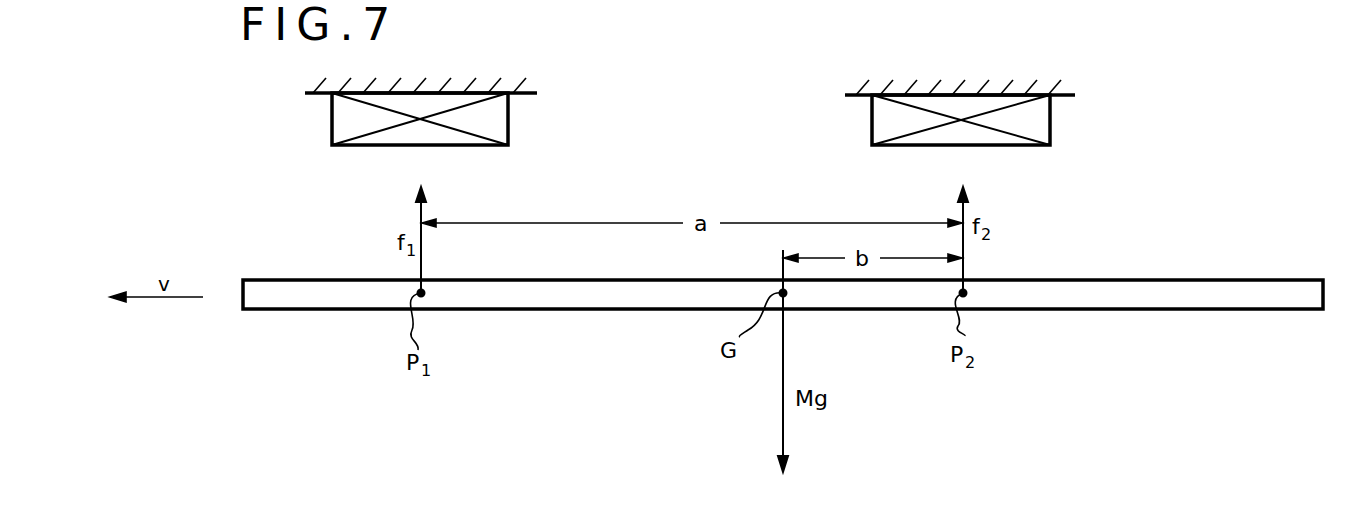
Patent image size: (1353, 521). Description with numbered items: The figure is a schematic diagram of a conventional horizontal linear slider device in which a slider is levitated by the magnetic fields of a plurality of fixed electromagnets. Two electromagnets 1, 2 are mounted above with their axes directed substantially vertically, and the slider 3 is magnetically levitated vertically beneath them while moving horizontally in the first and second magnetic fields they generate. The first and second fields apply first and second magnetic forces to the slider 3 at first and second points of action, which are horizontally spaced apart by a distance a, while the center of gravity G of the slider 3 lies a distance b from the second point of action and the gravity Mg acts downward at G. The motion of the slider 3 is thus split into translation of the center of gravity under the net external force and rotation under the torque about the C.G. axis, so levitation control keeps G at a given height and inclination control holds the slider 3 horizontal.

The electromagnet 1 is at (488, 118).
The electromagnet 2 is at (885, 127).
The slider 3 is at (1132, 292).